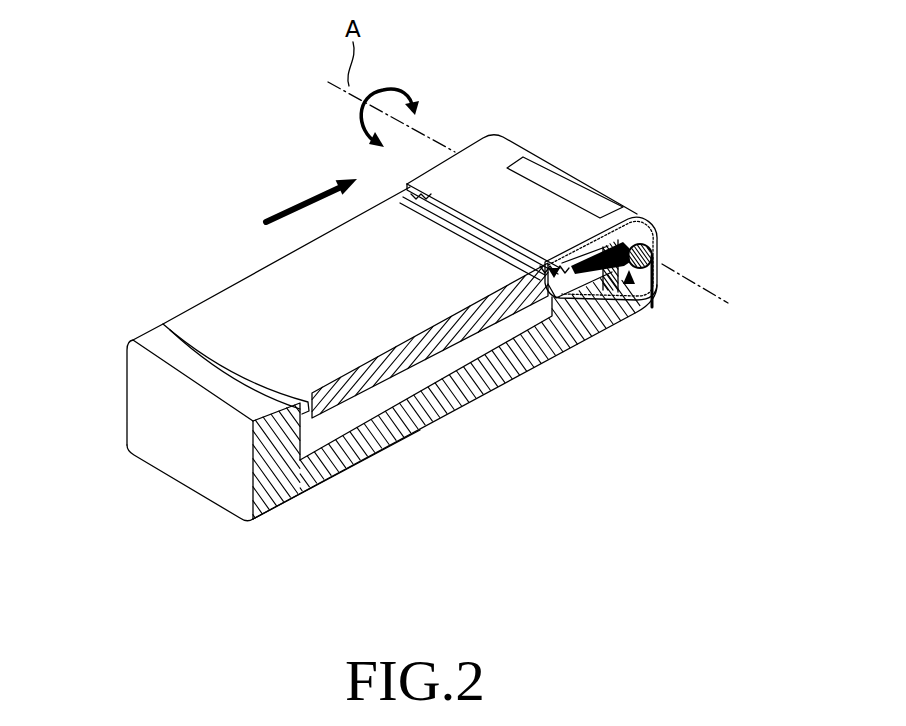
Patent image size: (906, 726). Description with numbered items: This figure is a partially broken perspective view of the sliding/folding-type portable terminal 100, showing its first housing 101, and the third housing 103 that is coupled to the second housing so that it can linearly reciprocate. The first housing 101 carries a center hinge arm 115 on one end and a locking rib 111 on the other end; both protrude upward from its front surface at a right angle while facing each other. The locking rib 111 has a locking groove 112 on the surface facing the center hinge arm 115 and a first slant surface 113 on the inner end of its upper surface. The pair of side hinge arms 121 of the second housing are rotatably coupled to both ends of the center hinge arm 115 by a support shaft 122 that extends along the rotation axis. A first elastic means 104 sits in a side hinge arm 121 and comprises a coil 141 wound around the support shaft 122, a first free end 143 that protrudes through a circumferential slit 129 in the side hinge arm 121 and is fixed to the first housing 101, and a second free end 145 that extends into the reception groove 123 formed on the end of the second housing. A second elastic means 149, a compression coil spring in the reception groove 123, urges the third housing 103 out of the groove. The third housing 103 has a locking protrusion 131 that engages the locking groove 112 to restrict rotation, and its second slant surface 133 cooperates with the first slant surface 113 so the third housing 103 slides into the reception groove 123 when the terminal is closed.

The sliding/folding-type portable terminal 100 is at (184, 138).
The first housing 101 is at (170, 491).
The third housing 103 is at (233, 273).
The first elastic means 104 is at (632, 290).
The locking rib 111 is at (147, 347).
The locking groove 112 is at (335, 478).
The first slant surface 113 is at (161, 326).
The center hinge arm 115 is at (563, 177).
The side hinge arms 121 is at (508, 148).
The support shaft 122 is at (660, 236).
The reception groove 123 is at (572, 283).
The slit 129 is at (663, 242).
The locking protrusion 131 is at (278, 442).
The second slant surface 133 is at (340, 450).
The coil 141 is at (657, 222).
The first free end 143 is at (657, 293).
The second free end 145 is at (612, 292).
The second elastic means 149 is at (560, 298).